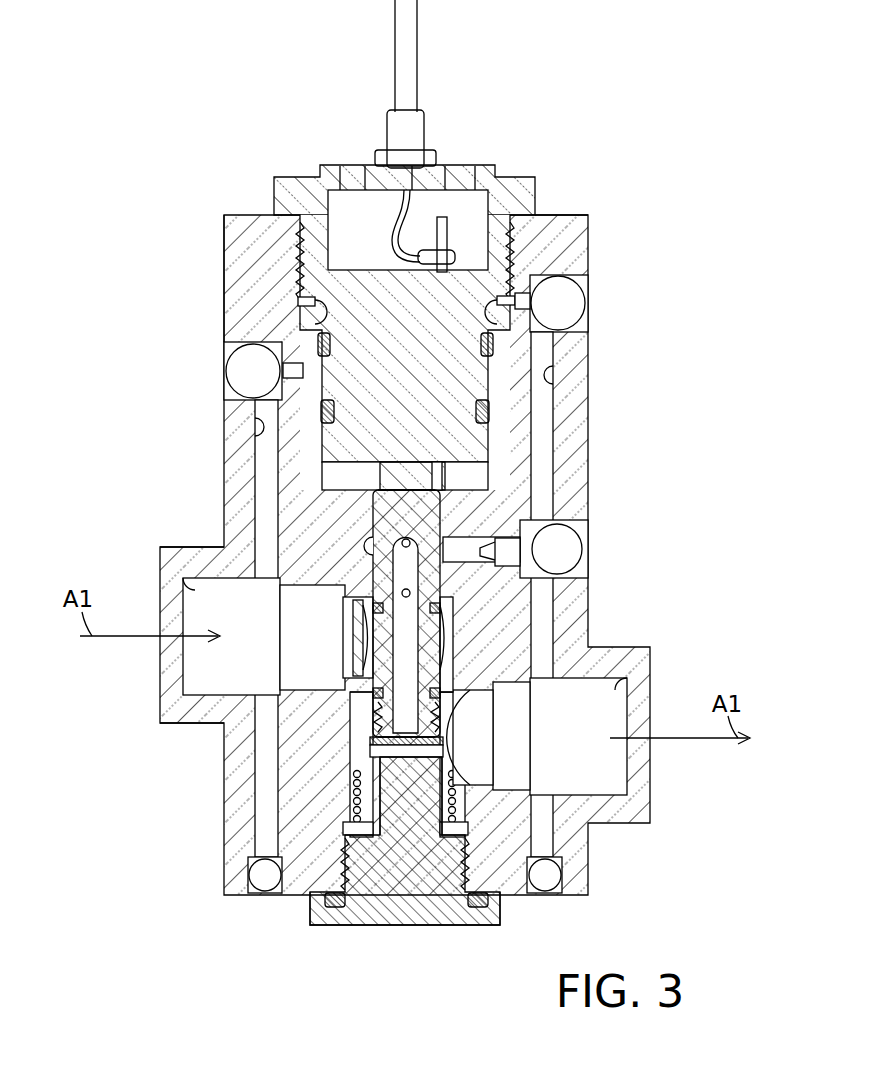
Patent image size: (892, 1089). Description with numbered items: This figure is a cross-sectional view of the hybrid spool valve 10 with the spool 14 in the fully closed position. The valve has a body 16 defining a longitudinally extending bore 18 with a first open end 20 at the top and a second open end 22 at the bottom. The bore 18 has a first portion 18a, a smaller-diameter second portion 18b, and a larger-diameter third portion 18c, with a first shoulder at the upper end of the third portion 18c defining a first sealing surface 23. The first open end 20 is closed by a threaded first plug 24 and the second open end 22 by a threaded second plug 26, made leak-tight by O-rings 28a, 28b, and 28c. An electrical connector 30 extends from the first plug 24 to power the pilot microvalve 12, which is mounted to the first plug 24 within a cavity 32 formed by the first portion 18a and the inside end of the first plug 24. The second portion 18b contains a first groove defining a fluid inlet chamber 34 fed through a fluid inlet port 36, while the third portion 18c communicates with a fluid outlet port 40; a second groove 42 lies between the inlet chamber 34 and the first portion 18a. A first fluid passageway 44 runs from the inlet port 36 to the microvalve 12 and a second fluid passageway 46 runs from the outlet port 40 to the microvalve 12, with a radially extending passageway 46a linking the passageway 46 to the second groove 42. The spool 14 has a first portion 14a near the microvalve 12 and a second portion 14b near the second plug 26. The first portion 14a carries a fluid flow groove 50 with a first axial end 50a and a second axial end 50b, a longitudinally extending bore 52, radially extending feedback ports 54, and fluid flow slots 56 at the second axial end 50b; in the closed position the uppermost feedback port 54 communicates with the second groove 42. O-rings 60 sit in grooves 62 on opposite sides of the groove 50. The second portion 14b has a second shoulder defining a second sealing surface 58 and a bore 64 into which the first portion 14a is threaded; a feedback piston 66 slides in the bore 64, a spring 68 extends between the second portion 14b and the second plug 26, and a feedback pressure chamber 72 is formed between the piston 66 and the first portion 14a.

The hybrid spool valve 10 is at (218, 56).
The pilot microvalve 12 is at (480, 470).
The spool 14 is at (362, 520).
The first portion of the spool 14a is at (373, 492).
The second portion of the spool 14b is at (368, 735).
The body 16 is at (245, 250).
The longitudinally extending bore 18 is at (540, 292).
The first portion of the bore 18a is at (300, 300).
The second portion of the bore 18b is at (470, 498).
The third portion of the bore 18c is at (375, 690).
The first open end 20 is at (500, 200).
The second open end 22 is at (458, 875).
The first sealing surface 23 is at (468, 720).
The first plug 24 is at (290, 190).
The second plug 26 is at (345, 925).
The O-ring 28a is at (318, 900).
The O-ring 28b is at (492, 413).
The O-ring 28c is at (495, 355).
The electrical connector 30 is at (390, 128).
The cavity 32 is at (485, 487).
The fluid inlet chamber 34 is at (410, 593).
The fluid inlet port 36 is at (190, 600).
The fluid outlet port 40 is at (622, 690).
The second groove 42 is at (368, 548).
The first fluid passageway 44 is at (262, 418).
The second fluid passageway 46 is at (548, 373).
The radially extending passageway 46a is at (548, 550).
The fluid flow groove 50 is at (380, 633).
The first axial end of the fluid flow groove 50a is at (370, 623).
The second axial end of the fluid flow groove 50b is at (447, 618).
The longitudinally extending bore 52 is at (385, 670).
The feedback port 54 is at (410, 548).
The fluid flow slot 56 is at (447, 645).
The second sealing surface 58 is at (455, 700).
The O-ring 60 is at (320, 538).
The groove 62 is at (440, 606).
The longitudinally extending bore 64 is at (355, 772).
The feedback piston 66 is at (393, 808).
The spring 68 is at (458, 800).
The feedback pressure chamber 72 is at (420, 745).